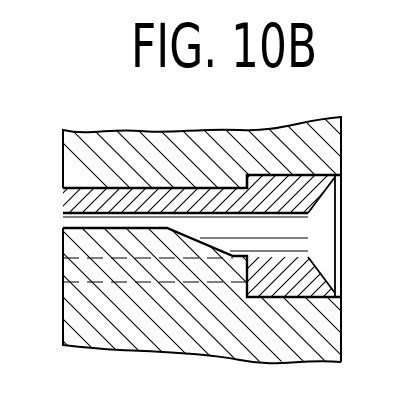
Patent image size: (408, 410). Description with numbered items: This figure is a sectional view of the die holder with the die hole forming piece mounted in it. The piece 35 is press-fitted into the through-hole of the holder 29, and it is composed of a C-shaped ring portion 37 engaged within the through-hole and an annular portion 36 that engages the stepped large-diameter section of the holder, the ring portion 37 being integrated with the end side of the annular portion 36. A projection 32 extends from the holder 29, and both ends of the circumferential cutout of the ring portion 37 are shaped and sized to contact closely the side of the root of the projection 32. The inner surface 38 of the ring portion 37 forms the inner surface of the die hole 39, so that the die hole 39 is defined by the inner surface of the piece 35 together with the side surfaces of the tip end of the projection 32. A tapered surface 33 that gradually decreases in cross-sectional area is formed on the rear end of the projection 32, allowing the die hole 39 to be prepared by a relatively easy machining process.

The holder 29 is at (297, 148).
The projection 32 is at (82, 238).
The tapered surface 33 is at (223, 250).
The piece for forming the die hole 35 is at (123, 187).
The annular portion 36 is at (312, 188).
The C-shaped ring portion 37 is at (70, 196).
The inner surface 38 is at (181, 212).
The die hole 39 is at (219, 230).